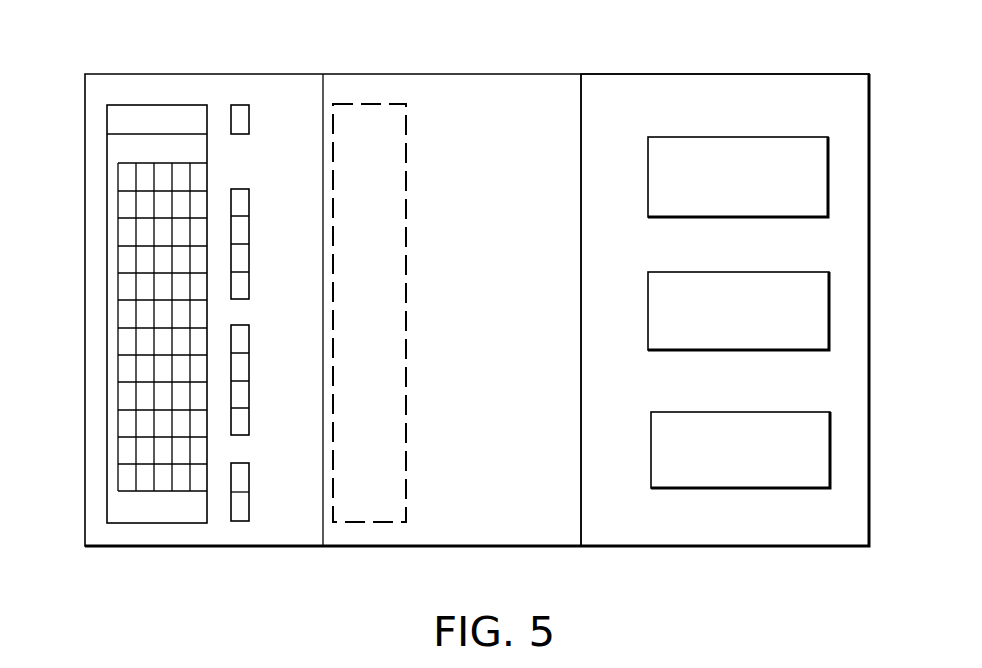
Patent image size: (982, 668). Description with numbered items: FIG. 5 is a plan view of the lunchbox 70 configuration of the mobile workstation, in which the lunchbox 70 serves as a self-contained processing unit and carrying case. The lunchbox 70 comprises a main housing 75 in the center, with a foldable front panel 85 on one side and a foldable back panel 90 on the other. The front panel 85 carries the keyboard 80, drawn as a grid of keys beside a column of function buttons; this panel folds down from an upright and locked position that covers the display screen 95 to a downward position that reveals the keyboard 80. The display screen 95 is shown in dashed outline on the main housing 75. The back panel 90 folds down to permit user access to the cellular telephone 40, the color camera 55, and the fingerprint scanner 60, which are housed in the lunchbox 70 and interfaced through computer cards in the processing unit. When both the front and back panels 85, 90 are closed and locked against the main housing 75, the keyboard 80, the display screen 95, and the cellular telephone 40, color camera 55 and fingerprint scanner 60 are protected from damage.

The lunchbox 70 is at (338, 73).
The main housing 75 is at (516, 73).
The keyboard 80 is at (180, 524).
The foldable front panel 85 is at (284, 547).
The foldable back panel 90 is at (778, 73).
The display screen 95 is at (362, 127).
The cellular telephone 40 is at (742, 137).
The color camera 55 is at (748, 272).
The fingerprint scanner 60 is at (745, 410).